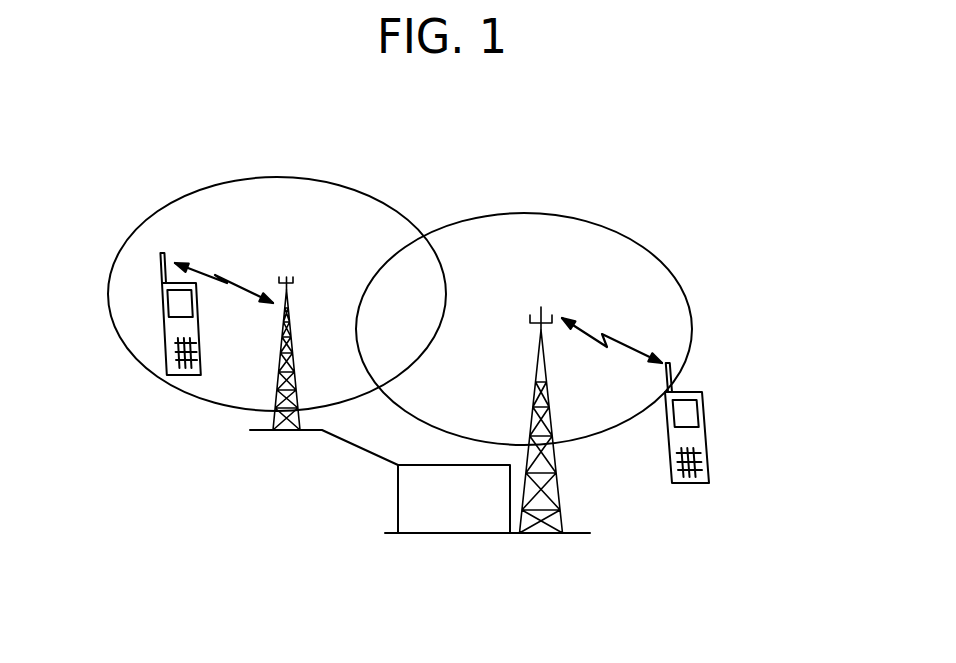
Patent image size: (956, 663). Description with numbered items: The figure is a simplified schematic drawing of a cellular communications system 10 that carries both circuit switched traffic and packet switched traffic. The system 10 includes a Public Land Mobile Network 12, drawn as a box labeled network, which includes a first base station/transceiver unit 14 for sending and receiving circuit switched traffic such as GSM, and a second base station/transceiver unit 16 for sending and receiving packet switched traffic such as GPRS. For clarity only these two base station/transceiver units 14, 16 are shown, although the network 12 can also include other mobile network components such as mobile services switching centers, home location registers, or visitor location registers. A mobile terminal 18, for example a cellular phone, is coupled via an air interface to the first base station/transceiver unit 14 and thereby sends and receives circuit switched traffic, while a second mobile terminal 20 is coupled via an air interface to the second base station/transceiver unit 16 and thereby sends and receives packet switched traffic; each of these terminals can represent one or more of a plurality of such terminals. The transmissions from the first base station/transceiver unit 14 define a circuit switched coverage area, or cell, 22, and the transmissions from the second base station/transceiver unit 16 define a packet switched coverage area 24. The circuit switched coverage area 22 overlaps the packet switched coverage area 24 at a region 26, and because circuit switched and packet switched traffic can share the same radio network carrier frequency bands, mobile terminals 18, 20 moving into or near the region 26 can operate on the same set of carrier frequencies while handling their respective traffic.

The system 10 is at (648, 178).
The Public Land Mobile Network 12 is at (406, 521).
The first base station/transceiver unit 14 is at (559, 490).
The second base station/transceiver unit 16 is at (273, 417).
The mobile terminal 18 is at (707, 484).
The second mobile terminal 20 is at (166, 376).
The circuit switched coverage area 22 is at (692, 323).
The packet switched coverage area 24 is at (117, 327).
The region 26 is at (402, 307).